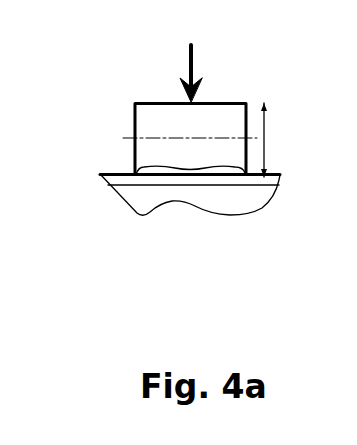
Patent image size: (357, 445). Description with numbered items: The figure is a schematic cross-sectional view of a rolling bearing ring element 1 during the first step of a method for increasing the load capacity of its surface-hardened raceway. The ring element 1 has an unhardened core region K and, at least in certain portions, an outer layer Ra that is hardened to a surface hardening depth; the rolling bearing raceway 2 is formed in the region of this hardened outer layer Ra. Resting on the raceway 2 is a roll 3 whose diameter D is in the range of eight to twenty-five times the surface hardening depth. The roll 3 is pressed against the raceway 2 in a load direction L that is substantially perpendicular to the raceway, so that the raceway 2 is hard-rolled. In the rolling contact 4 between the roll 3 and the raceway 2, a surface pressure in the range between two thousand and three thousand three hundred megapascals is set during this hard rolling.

The roll 3 is at (152, 115).
The rolling contact 4 is at (192, 160).
The rolling bearing raceway 2 is at (118, 172).
The rolling bearing ring element 1 is at (166, 218).
The core region K is at (137, 194).
The load direction L is at (193, 58).
The diameter D is at (275, 140).
The outer layer Ra is at (257, 180).